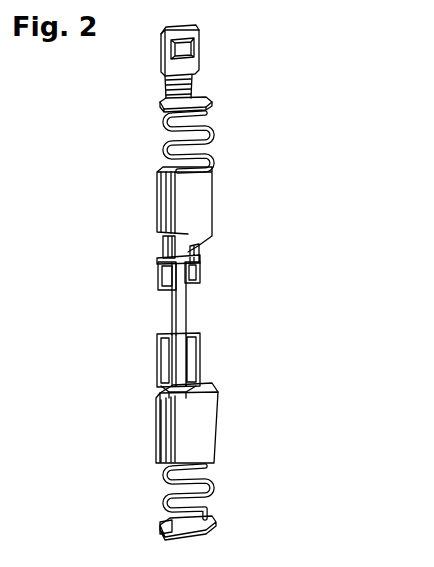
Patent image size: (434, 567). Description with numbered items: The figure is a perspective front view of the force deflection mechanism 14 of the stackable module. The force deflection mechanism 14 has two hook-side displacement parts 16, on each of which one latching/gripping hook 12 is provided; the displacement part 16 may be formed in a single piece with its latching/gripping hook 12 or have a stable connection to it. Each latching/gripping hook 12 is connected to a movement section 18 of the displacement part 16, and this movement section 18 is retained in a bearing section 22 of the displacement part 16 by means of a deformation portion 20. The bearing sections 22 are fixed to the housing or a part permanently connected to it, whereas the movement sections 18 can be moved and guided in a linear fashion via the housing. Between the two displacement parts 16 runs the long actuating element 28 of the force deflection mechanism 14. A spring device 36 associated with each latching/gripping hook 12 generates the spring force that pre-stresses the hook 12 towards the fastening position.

The latching/gripping hook 12 is at (205, 250).
The force deflection mechanism 14 is at (277, 128).
The hook-side displacement part 16 is at (148, 205).
The movement section 18 is at (152, 183).
The deformation portion 20 is at (162, 245).
The bearing section 22 is at (160, 264).
The actuating element 28 is at (188, 326).
The spring device 36 is at (203, 127).